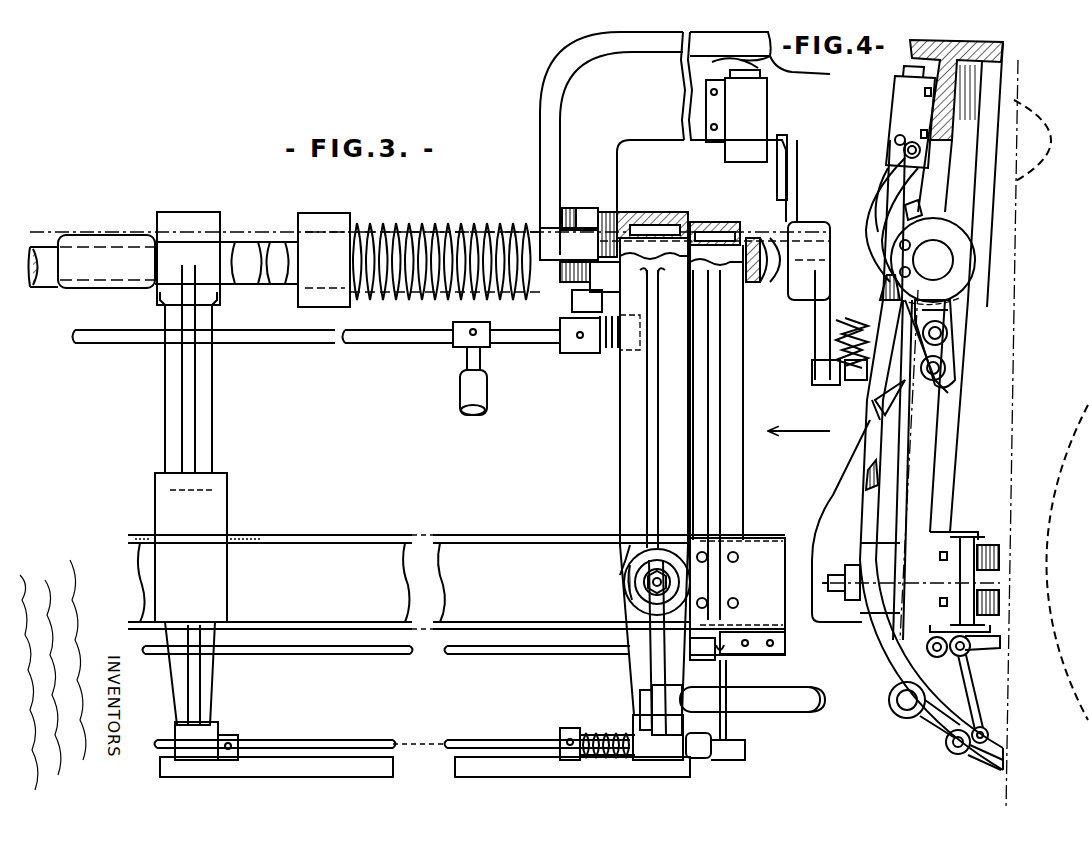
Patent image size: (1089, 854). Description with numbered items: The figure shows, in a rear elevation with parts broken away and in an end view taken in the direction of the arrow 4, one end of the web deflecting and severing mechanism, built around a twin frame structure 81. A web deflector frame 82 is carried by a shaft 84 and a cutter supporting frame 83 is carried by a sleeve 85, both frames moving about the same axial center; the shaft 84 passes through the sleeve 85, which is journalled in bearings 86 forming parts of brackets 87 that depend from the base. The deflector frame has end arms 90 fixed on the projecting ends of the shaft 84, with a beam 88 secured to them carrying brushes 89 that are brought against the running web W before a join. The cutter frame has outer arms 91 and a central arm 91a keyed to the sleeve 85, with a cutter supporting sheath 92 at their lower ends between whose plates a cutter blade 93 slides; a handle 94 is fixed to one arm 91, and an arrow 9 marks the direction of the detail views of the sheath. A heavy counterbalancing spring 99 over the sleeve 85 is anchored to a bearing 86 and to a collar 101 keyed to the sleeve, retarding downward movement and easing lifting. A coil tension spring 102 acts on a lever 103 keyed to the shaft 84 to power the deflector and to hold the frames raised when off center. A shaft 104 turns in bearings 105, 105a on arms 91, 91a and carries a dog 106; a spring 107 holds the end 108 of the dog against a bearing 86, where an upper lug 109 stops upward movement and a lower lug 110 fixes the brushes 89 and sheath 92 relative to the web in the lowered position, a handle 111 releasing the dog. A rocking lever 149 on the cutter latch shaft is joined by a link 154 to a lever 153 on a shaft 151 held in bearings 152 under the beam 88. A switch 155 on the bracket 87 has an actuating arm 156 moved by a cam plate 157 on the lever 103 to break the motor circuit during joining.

In FIG. 3, the arrow 4 is at (799, 432).
In FIG. 4, the pin 9 is at (962, 752).
In FIG. 3, the twin frame structure 81 is at (750, 416).
In FIG. 3, the web deflector frame 82 is at (745, 476).
In FIG. 4, the web deflector frame 82 is at (946, 465).
In FIG. 3, the cutter supporting frame 83 is at (618, 487).
In FIG. 4, the cutter supporting frame 83 is at (860, 652).
In FIG. 3, the shaft 84 is at (55, 283).
In FIG. 4, the shaft 84 is at (933, 260).
In FIG. 3, the sleeve 85 is at (105, 234).
In FIG. 3, the bearings 86 is at (605, 207).
In FIG. 3, the brackets 87 is at (537, 108).
In FIG. 4, the brackets 87 is at (960, 126).
In FIG. 3, the beam 88 is at (492, 533).
In FIG. 4, the beam 88 is at (958, 532).
In FIG. 4, the brushes 89 is at (984, 543).
In FIG. 3, the end arms 90 is at (744, 506).
In FIG. 3, the outer arms 91 is at (630, 675).
In FIG. 3, the centrally disposed arm 91a is at (220, 686).
In FIG. 3, the cutter supporting sheath 92 is at (780, 762).
In FIG. 4, the cutter supporting sheath 92 is at (1012, 766).
In FIG. 4, the cutter blade 93 is at (978, 760).
In FIG. 3, the handle 94 is at (796, 716).
In FIG. 4, the handle 94 is at (926, 695).
In FIG. 3, the counterbalancing spring 99 is at (402, 221).
In FIG. 3, the collar 101 is at (337, 213).
In FIG. 3, the coil tension spring 102 is at (855, 317).
In FIG. 4, the coil tension spring 102 is at (850, 318).
In FIG. 3, the lever 103 is at (814, 328).
In FIG. 4, the lever 103 is at (942, 388).
In FIG. 3, the shaft 104 is at (382, 345).
In FIG. 4, the shaft 104 is at (947, 331).
In FIG. 3, the bearing 105 is at (630, 352).
In FIG. 4, the bearing 105 is at (946, 364).
In FIG. 3, the bearing 105a is at (176, 348).
In FIG. 3, the dog 106 is at (564, 311).
In FIG. 4, the dog 106 is at (935, 307).
In FIG. 3, the counterbalancing spring 107 is at (606, 354).
In FIG. 3, the end of the dog 108 is at (577, 294).
In FIG. 4, the end of the dog 108 is at (912, 294).
In FIG. 3, the upper lug 109 is at (565, 207).
In FIG. 4, the upper lug 109 is at (920, 202).
In FIG. 3, the lower lug 110 is at (568, 334).
In FIG. 4, the lower lug 110 is at (883, 288).
In FIG. 3, the handle 111 is at (466, 408).
In FIG. 4, the handle 111 is at (870, 402).
In FIG. 3, the rocking lever 149 is at (700, 757).
In FIG. 4, the rocking lever 149 is at (946, 734).
In FIG. 3, the shaft 151 is at (528, 651).
In FIG. 4, the shaft 151 is at (928, 649).
In FIG. 3, the bearings 152 is at (788, 639).
In FIG. 4, the bearings 152 is at (928, 634).
In FIG. 3, the lever 153 is at (735, 649).
In FIG. 4, the lever 153 is at (972, 651).
In FIG. 3, the link 154 is at (730, 716).
In FIG. 4, the link 154 is at (958, 661).
In FIG. 3, the switch 155 is at (722, 150).
In FIG. 4, the switch 155 is at (892, 88).
In FIG. 3, the switch actuating arm 156 is at (775, 172).
In FIG. 4, the switch actuating arm 156 is at (876, 168).
In FIG. 3, the cam plate 157 is at (792, 221).
In FIG. 4, the cam plate 157 is at (862, 213).
In FIG. 4, the wheel W is at (1005, 380).